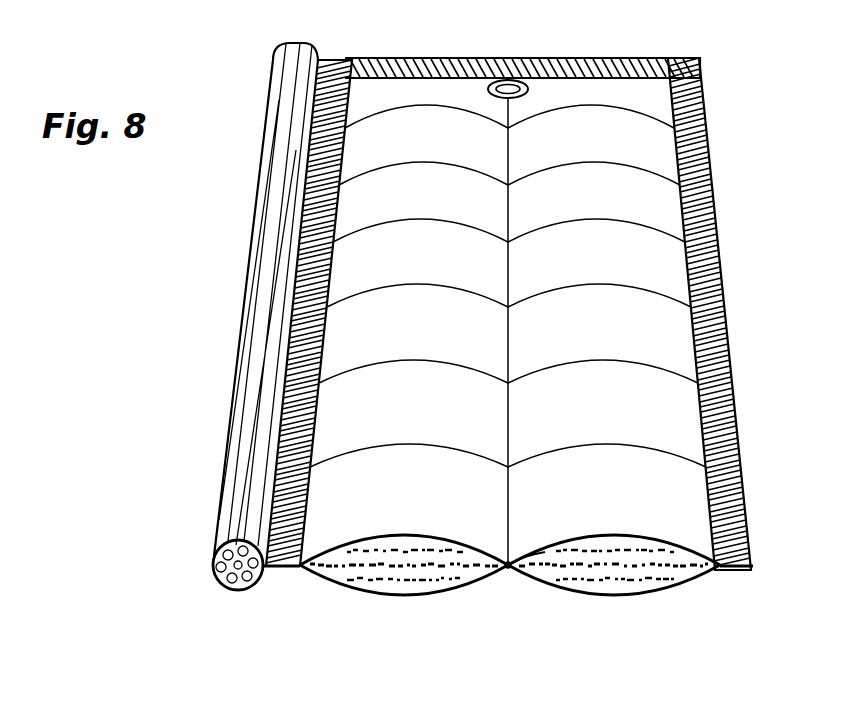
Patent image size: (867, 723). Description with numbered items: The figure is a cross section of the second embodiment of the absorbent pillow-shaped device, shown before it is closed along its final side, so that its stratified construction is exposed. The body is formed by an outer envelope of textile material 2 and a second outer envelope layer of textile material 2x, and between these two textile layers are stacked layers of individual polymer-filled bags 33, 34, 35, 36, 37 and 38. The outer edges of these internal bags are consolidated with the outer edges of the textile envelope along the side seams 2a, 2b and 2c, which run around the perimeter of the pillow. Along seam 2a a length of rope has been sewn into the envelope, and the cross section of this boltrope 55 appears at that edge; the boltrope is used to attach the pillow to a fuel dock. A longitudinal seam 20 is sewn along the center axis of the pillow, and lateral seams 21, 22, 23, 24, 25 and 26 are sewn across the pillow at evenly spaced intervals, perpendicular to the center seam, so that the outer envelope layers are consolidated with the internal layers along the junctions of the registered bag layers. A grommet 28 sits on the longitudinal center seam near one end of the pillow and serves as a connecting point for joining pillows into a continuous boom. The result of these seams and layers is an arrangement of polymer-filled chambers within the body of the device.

The envelope 2 is at (703, 550).
The side seam 2a is at (293, 273).
The side seam 2b is at (462, 57).
The side seam 2c is at (713, 164).
The outer envelope layer of textile material 2x is at (528, 582).
The longitudinal seam 20 is at (505, 575).
The lateral seam 21 is at (385, 123).
The lateral seam 22 is at (382, 172).
The lateral seam 23 is at (378, 229).
The lateral seam 24 is at (374, 292).
The lateral seam 25 is at (367, 366).
The lateral seam 26 is at (357, 452).
The grommet 28 is at (527, 93).
The polymer-filled bag 33 is at (330, 586).
The polymer-filled bag 34 is at (365, 592).
The polymer-filled bag 35 is at (410, 596).
The polymer-filled bag 36 is at (658, 593).
The polymer-filled bag 37 is at (615, 575).
The polymer-filled bag 38 is at (572, 593).
The boltrope 55 is at (260, 360).